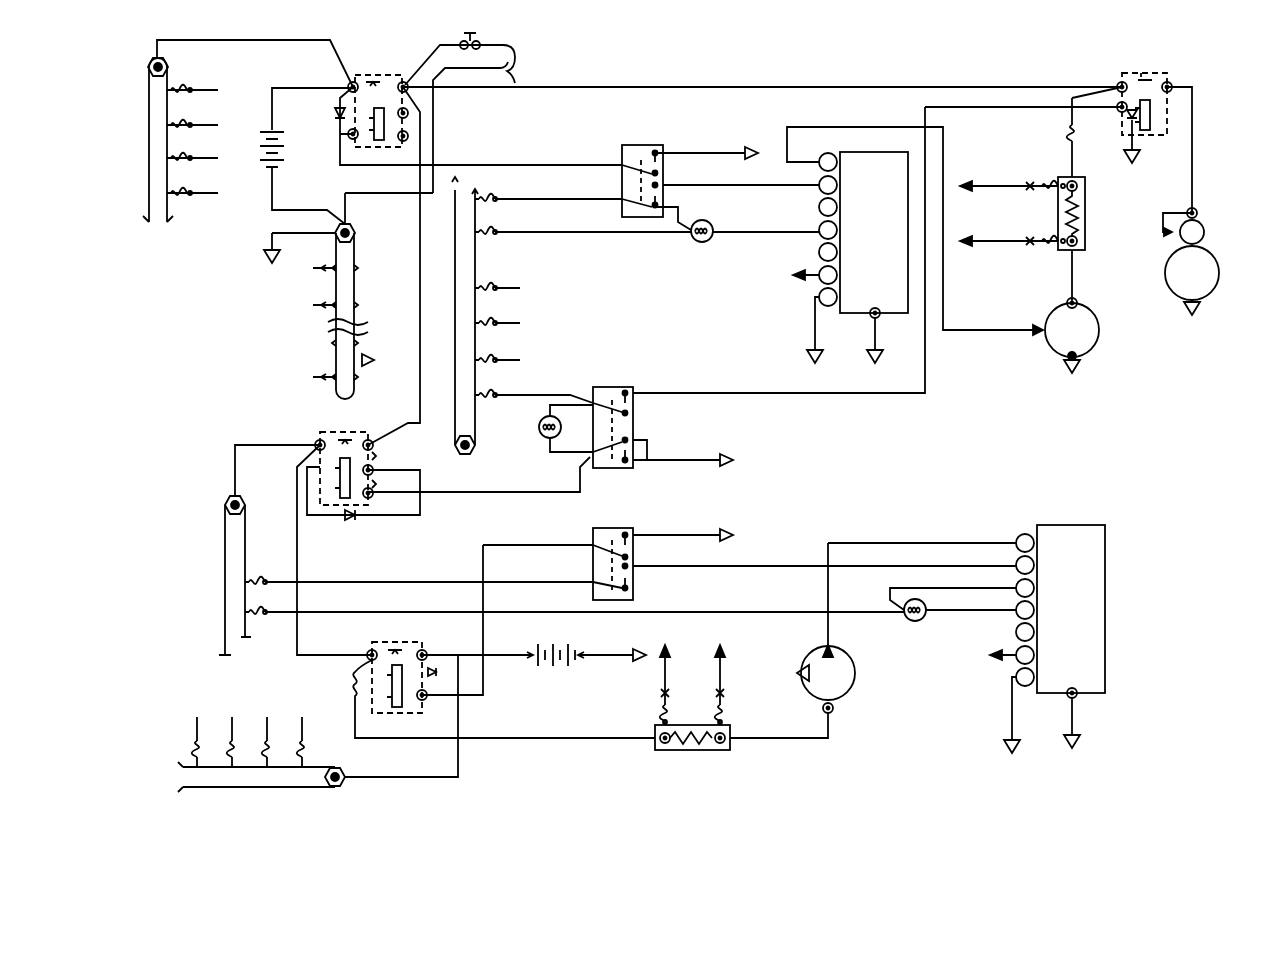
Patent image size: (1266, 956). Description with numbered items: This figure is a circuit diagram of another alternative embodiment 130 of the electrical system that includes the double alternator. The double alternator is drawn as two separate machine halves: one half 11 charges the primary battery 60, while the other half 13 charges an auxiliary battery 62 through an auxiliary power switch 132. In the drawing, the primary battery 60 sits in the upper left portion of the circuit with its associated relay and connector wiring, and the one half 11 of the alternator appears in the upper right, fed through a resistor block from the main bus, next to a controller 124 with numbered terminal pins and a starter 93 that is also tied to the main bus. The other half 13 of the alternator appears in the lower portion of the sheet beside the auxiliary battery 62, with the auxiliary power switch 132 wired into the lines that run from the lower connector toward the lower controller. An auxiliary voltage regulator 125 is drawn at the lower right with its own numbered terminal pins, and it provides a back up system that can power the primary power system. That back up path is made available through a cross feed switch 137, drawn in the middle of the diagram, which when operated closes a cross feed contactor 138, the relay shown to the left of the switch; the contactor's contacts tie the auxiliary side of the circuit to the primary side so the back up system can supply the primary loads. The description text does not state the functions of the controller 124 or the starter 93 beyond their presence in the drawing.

The alternative embodiment 130 is at (707, 82).
The primary battery 60 is at (265, 153).
The controller 124 is at (860, 245).
The auxiliary voltage regulator 125 is at (1057, 621).
The one half of the double alternator 11 is at (1062, 341).
The other half of the double alternator 13 is at (818, 684).
The starter 93 is at (1212, 268).
The cross feed switch 137 is at (622, 446).
The cross feed contactor 138 is at (347, 433).
The auxiliary power switch 132 is at (615, 543).
The auxiliary battery 62 is at (558, 667).